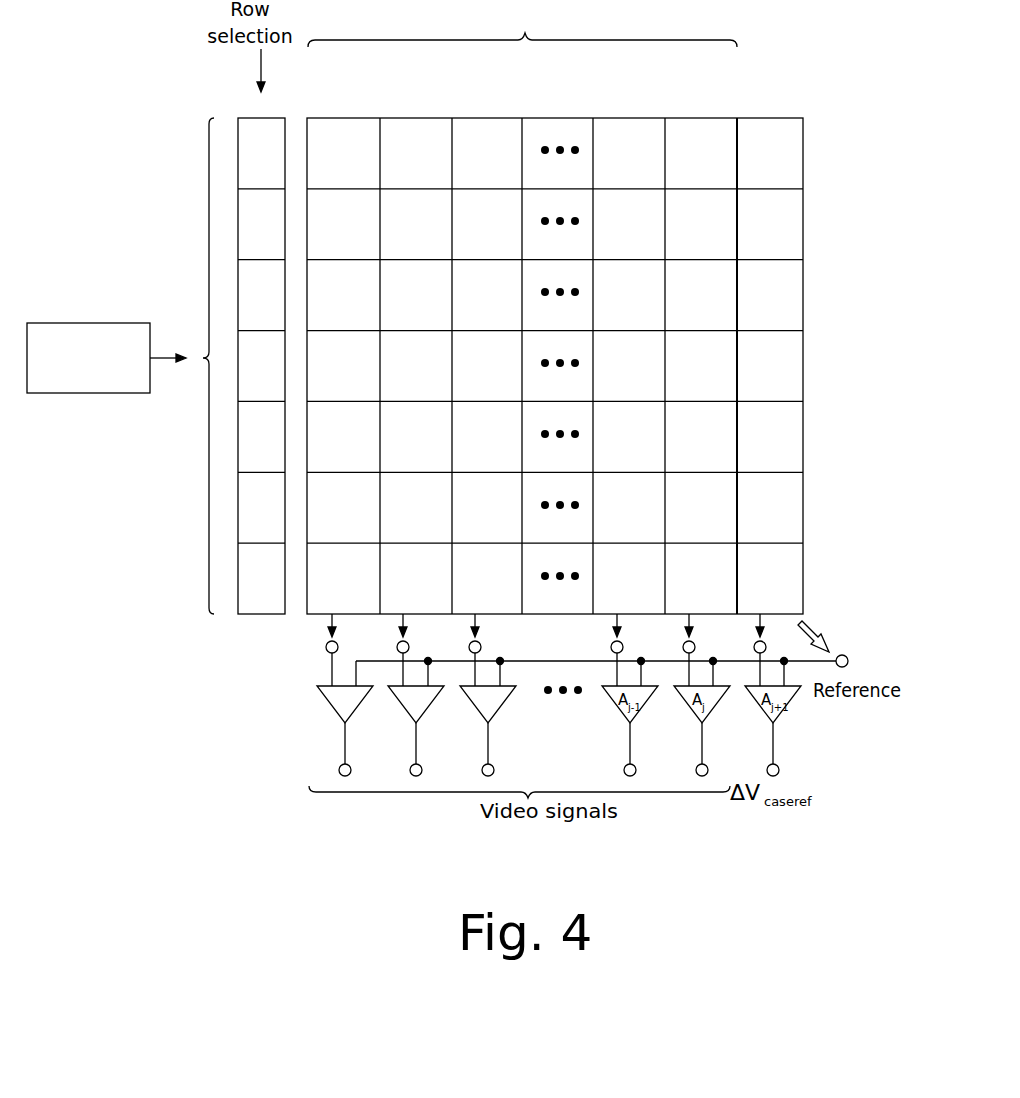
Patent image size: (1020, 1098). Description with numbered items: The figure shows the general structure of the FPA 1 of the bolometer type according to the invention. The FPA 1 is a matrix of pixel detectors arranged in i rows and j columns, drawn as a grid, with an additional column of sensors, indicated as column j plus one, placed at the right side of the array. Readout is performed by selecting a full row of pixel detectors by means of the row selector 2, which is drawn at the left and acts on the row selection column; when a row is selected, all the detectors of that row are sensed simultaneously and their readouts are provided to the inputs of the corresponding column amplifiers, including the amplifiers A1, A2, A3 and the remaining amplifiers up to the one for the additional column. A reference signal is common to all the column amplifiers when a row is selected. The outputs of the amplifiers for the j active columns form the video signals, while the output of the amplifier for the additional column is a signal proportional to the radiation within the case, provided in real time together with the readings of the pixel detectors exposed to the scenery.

The FPA 1 is at (402, 117).
The row selector 2 is at (98, 323).
The column amplifier A1 is at (345, 695).
The column amplifier A2 is at (416, 695).
The column amplifier A3 is at (488, 695).
The rows i is at (202, 366).
The columns j is at (522, 25).